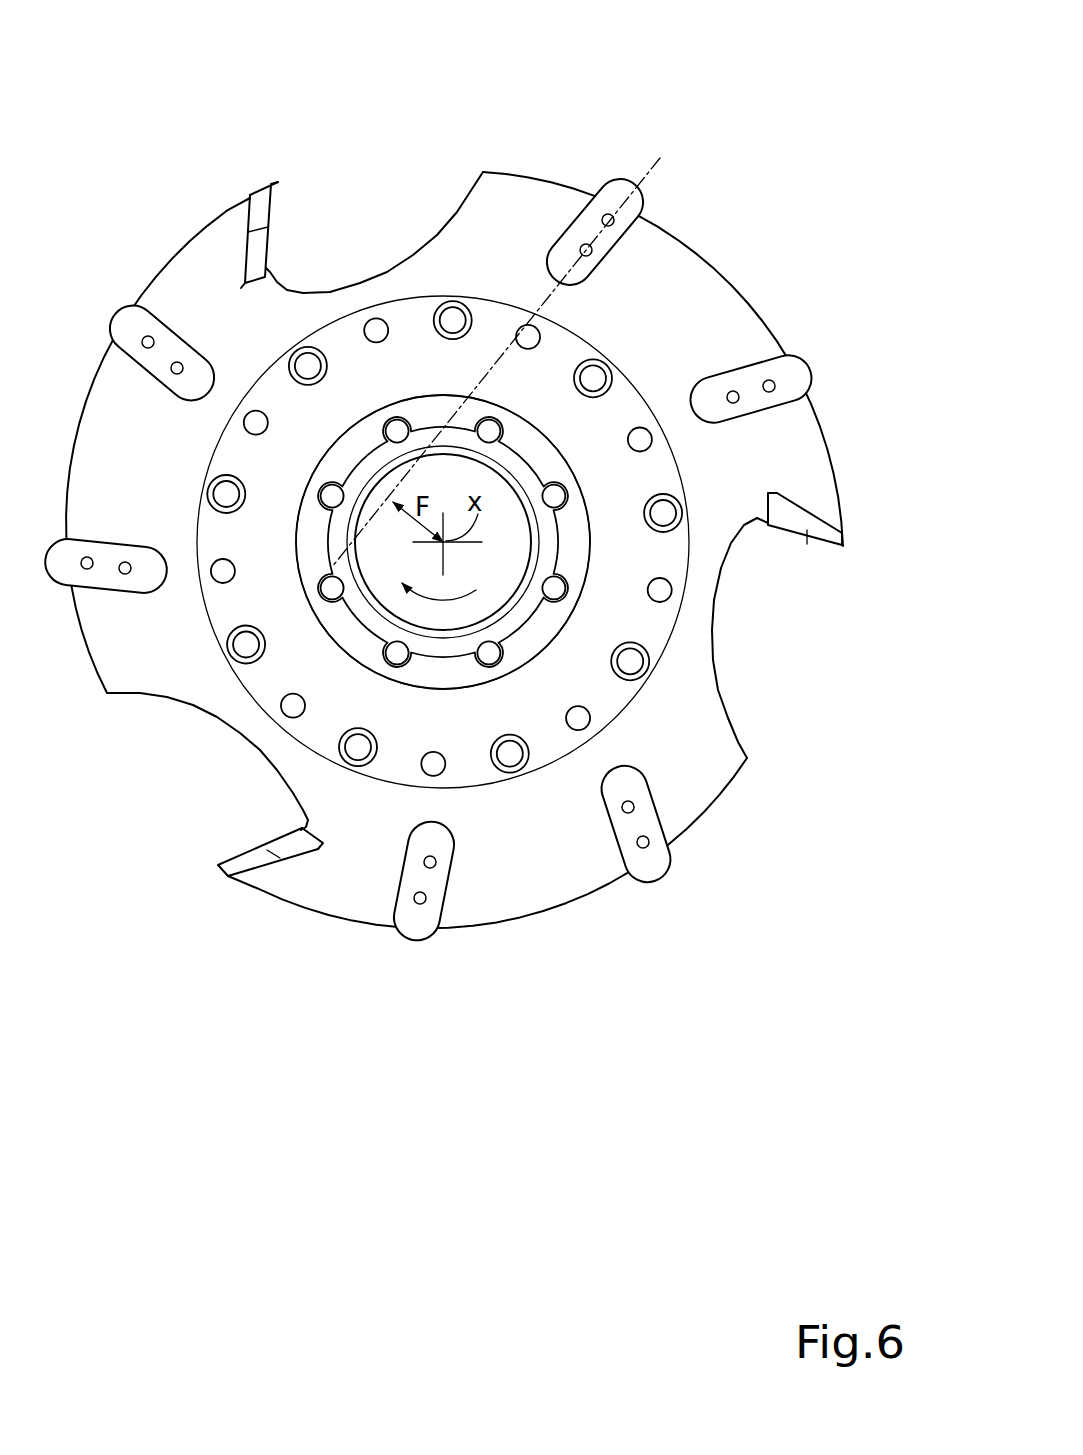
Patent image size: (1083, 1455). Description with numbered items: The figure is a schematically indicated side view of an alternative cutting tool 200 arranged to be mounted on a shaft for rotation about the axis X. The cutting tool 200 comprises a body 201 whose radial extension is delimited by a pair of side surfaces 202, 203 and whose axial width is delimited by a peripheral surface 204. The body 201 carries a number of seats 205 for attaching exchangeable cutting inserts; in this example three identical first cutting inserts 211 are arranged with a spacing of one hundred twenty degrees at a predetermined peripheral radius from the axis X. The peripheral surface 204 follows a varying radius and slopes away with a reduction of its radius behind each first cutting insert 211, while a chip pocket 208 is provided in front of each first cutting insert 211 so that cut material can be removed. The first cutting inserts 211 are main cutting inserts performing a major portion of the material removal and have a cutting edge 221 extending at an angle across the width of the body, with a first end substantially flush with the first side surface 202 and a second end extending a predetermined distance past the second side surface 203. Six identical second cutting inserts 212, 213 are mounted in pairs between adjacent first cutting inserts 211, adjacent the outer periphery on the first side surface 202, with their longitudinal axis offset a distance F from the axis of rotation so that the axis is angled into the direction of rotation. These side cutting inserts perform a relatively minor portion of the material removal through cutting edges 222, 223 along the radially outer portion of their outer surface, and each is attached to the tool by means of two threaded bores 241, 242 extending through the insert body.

The cutting tool 200 is at (766, 100).
The body 201 is at (650, 290).
The first side surface 202 is at (315, 893).
The second side surface 203 is at (360, 890).
The peripheral surface 204 is at (168, 253).
The seat 205 is at (272, 222).
The chip pocket 208 is at (362, 217).
The first cutting insert 211 is at (250, 195).
The second cutting insert 212 is at (752, 380).
The second cutting insert 213 is at (592, 233).
The cutting edge 221 is at (268, 184).
The cutting edge 222 is at (697, 392).
The cutting edge 223 is at (588, 195).
The threaded bore 241 is at (420, 898).
The threaded bore 242 is at (430, 862).